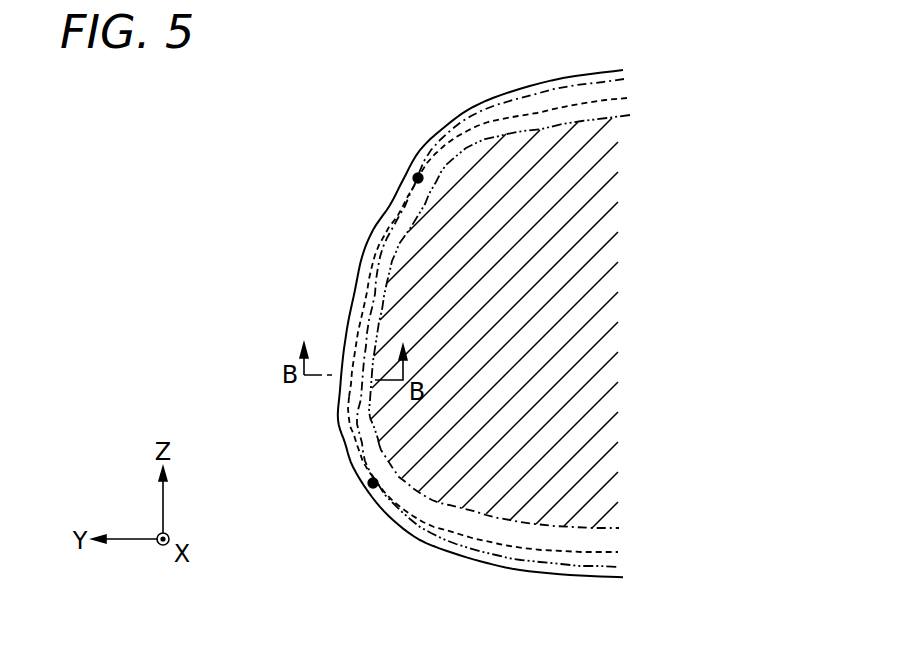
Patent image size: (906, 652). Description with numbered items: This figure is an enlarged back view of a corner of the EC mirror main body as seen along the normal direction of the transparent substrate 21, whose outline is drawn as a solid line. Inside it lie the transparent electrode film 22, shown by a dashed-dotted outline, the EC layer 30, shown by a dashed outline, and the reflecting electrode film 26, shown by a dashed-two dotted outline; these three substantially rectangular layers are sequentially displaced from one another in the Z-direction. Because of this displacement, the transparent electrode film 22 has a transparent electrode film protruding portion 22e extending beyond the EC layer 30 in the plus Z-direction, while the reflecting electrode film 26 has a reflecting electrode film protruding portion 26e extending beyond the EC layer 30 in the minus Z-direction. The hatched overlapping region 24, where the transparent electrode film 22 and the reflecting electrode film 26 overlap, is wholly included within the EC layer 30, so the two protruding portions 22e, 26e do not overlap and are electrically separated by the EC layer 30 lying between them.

The transparent substrate 21 is at (368, 240).
The transparent electrode film 22 is at (452, 123).
The transparent electrode film protruding portion 22e is at (535, 96).
The overlapping region 24 is at (590, 331).
The reflecting electrode film 26 is at (400, 534).
The reflecting electrode film protruding portion 26e is at (458, 543).
The EC layer 30 is at (355, 300).